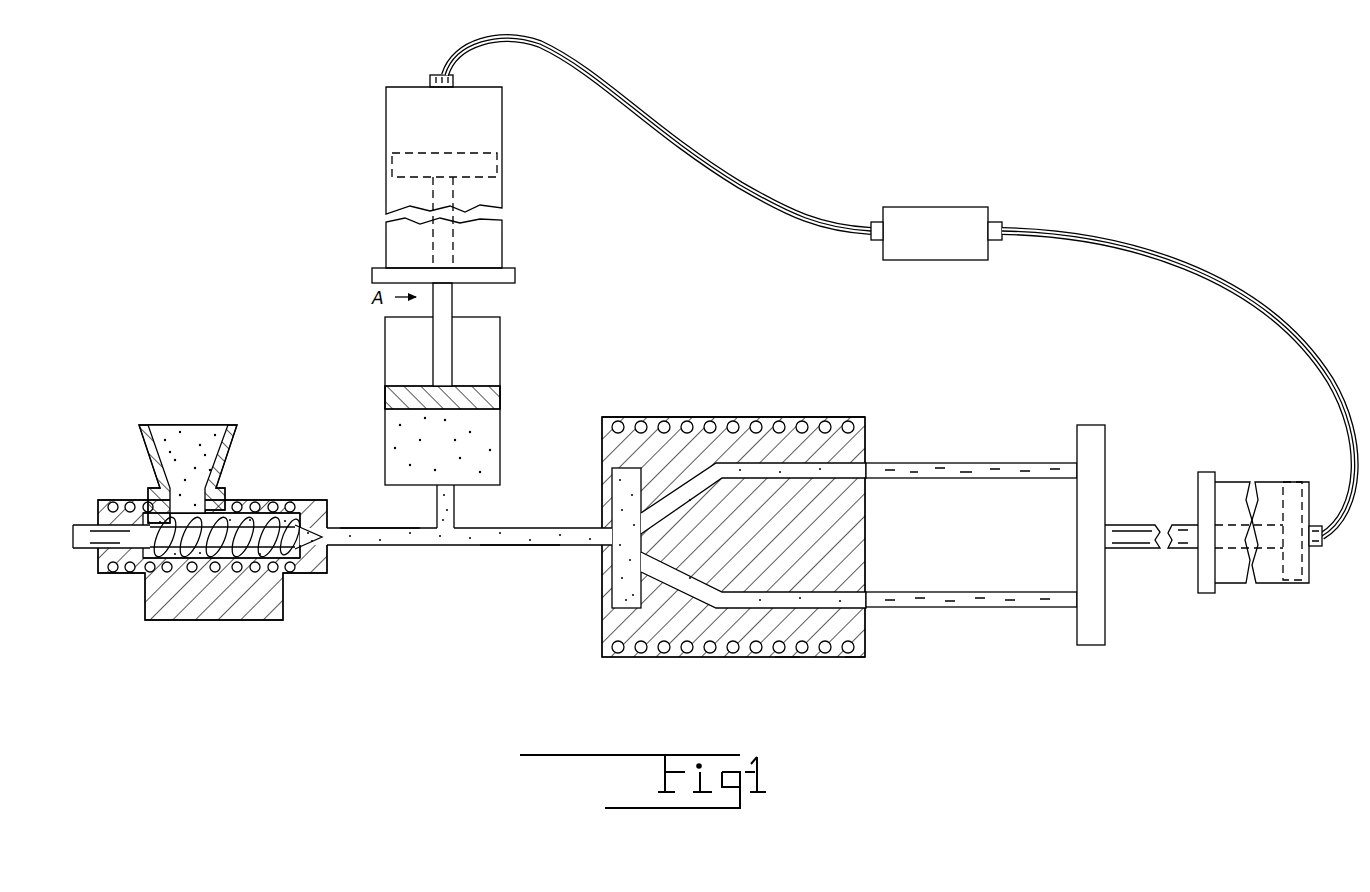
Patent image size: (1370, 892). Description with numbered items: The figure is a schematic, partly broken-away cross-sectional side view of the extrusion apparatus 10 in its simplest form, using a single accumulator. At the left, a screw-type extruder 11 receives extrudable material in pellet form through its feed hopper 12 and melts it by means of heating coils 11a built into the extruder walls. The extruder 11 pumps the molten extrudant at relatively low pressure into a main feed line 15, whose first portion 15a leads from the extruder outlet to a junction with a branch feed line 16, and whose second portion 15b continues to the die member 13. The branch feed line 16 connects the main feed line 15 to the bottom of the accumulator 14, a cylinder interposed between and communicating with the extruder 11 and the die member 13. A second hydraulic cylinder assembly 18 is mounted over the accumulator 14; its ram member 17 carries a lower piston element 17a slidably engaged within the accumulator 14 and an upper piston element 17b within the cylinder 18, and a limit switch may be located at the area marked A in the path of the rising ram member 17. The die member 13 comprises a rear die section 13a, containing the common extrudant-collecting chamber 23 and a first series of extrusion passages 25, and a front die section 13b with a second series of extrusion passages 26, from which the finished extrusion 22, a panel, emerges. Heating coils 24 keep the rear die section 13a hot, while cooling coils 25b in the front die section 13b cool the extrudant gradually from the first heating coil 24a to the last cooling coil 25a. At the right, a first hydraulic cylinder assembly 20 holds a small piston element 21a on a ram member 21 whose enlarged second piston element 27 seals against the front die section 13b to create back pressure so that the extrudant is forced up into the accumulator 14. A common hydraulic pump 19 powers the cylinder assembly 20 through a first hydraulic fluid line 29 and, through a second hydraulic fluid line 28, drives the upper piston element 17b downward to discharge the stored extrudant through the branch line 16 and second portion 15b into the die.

The extrusion apparatus 10 is at (318, 402).
The extruder 11 is at (120, 574).
The heating coils 11a is at (262, 501).
The feed hopper 12 is at (236, 433).
The die member 13 is at (742, 402).
The rear die section 13a is at (656, 657).
The front die section 13b is at (838, 417).
The accumulator 14 is at (385, 343).
The main feed line 15 is at (528, 522).
The first main feed line portion 15a is at (378, 548).
The second main feed line portion 15b is at (520, 548).
The branch feed line 16 is at (437, 510).
The ram member 17 is at (453, 297).
The lower piston element 17a is at (470, 388).
The upper piston element 17b is at (480, 151).
The second hydraulic cylinder assembly 18 is at (504, 101).
The hydraulic pump 19 is at (958, 207).
The first hydraulic cylinder assembly 20 is at (1243, 594).
The ram member 21 is at (1136, 512).
The first piston element 21a is at (1303, 585).
The finished extrusion 22 is at (990, 463).
The extrudant-collecting chamber 23 is at (618, 580).
The heating coils 24 is at (665, 421).
The first heating coil 24a is at (618, 421).
The first series of extrusion passages 25 is at (680, 511).
The last cooling coil 25a is at (865, 655).
The cooling coils 25b is at (790, 657).
The second series of extrusion passages 26 is at (778, 592).
The second piston element 27 is at (1105, 625).
The second hydraulic fluid line 28 is at (765, 208).
The first hydraulic fluid line 29 is at (1262, 308).